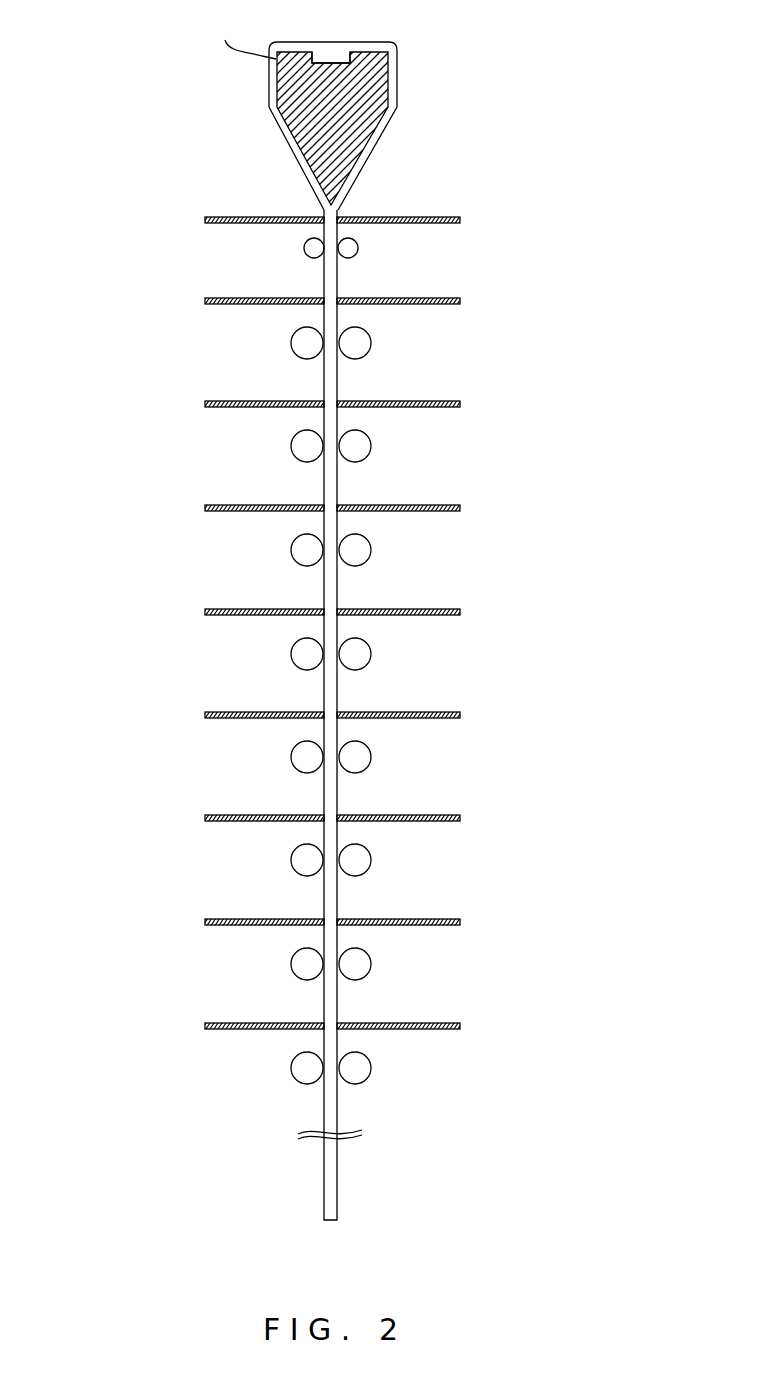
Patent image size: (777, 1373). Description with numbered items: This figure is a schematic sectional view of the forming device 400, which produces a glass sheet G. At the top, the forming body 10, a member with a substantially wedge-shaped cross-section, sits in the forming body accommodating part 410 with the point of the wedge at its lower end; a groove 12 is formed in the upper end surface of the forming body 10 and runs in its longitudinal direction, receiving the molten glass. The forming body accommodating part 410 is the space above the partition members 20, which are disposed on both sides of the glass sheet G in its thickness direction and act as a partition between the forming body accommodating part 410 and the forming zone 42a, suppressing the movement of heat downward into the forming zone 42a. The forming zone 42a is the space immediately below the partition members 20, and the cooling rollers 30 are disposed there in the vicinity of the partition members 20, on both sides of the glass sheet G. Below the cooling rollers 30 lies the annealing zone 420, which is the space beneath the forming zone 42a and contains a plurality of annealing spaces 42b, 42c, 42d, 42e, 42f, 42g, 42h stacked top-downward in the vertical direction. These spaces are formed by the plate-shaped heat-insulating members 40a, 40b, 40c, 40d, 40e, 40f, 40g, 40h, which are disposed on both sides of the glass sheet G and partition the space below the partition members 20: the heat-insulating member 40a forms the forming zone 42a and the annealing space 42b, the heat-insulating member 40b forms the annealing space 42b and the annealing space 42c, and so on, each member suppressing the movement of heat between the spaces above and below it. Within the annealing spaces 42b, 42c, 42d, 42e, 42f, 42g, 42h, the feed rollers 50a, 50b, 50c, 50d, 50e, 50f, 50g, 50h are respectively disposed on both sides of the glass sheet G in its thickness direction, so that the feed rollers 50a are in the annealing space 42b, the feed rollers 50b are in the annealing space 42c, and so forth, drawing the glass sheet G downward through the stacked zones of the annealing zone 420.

The forming device 400 is at (575, 78).
The forming body accommodating part 410 is at (98, 101).
The annealing zone 420 is at (100, 344).
The forming body 10 is at (377, 89).
The groove 12 is at (345, 48).
The partition members 20 is at (195, 220).
The cooling rollers 30 is at (310, 250).
The heat-insulating member 40a is at (195, 301).
The heat-insulating member 40b is at (195, 404).
The heat-insulating member 40c is at (195, 508).
The heat-insulating member 40d is at (195, 612).
The heat-insulating member 40e is at (195, 715).
The heat-insulating member 40f is at (195, 818).
The heat-insulating member 40g is at (195, 922).
The heat-insulating member 40h is at (195, 1026).
The forming zone 42a is at (229, 263).
The annealing space 42b is at (229, 354).
The annealing space 42c is at (229, 457).
The annealing space 42d is at (229, 561).
The annealing space 42e is at (229, 665).
The annealing space 42f is at (229, 768).
The annealing space 42g is at (229, 871).
The annealing space 42h is at (229, 975).
The feed rollers 50a is at (303, 347).
The feed rollers 50b is at (303, 450).
The feed rollers 50c is at (303, 554).
The feed rollers 50d is at (303, 658).
The feed rollers 50e is at (303, 761).
The feed rollers 50f is at (303, 864).
The feed rollers 50g is at (303, 968).
The feed rollers 50h is at (303, 1072).
The glass sheet G is at (330, 1101).